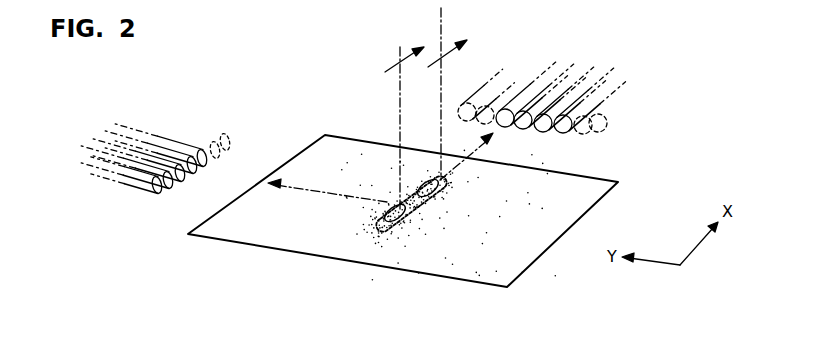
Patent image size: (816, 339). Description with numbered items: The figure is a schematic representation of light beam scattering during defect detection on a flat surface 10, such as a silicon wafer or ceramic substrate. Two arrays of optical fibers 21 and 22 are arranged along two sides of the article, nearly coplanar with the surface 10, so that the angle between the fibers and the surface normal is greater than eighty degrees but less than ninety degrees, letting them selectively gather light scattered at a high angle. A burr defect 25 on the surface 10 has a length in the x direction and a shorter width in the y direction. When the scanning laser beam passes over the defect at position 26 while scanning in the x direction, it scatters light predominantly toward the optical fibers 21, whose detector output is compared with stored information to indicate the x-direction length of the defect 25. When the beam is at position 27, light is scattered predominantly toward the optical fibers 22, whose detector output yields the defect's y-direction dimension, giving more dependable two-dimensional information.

The surface 10 is at (293, 232).
The optical fibers 21 is at (198, 133).
The optical fibers 22 is at (583, 131).
The burr defect 25 is at (378, 230).
The position 26 is at (413, 212).
The position 27 is at (442, 181).